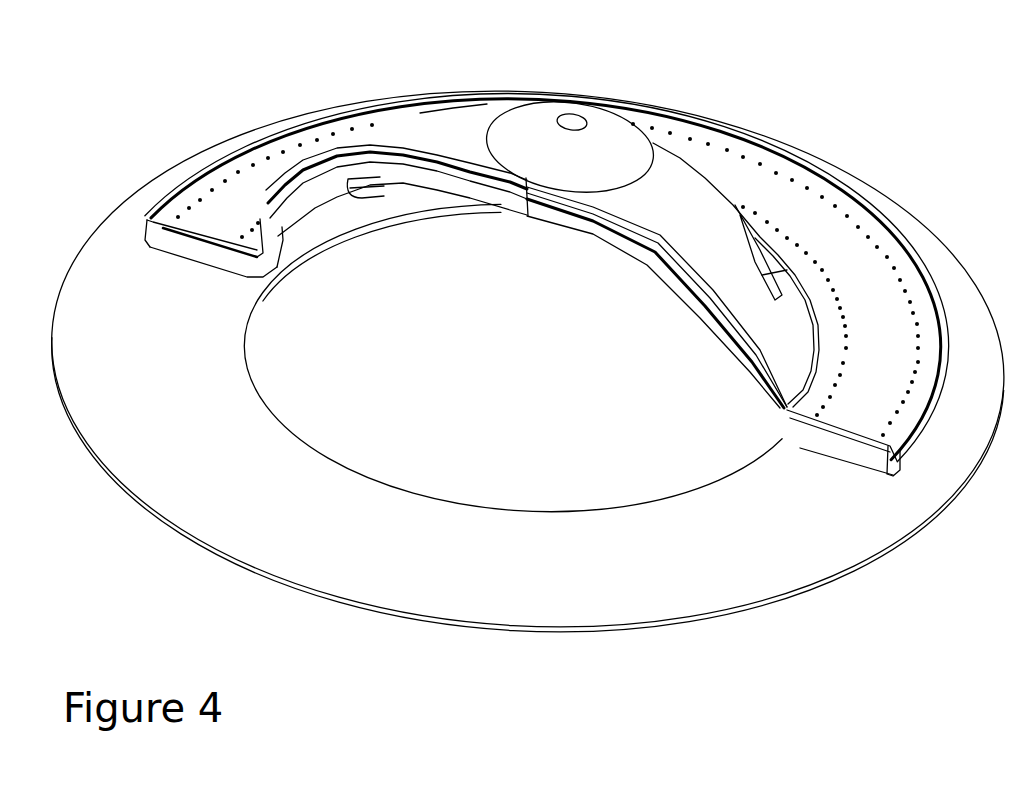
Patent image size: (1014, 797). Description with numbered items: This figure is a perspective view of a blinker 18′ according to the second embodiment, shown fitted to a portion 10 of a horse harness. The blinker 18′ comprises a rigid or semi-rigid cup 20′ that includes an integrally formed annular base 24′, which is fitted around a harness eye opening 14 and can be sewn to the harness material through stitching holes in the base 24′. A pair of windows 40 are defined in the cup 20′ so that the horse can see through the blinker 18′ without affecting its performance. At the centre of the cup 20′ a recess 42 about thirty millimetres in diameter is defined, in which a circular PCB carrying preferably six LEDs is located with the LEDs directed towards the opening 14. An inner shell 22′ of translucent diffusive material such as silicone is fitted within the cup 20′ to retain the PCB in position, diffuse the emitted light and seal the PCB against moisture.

The portion of the harness 10 is at (588, 578).
The harness eye opening 14 is at (509, 380).
The blinker 18′ is at (823, 202).
The cup 20′ is at (420, 155).
The inner shell 22′ is at (657, 280).
The annular base 24′ is at (213, 195).
The windows 40 is at (377, 200).
The recess 42 is at (612, 132).